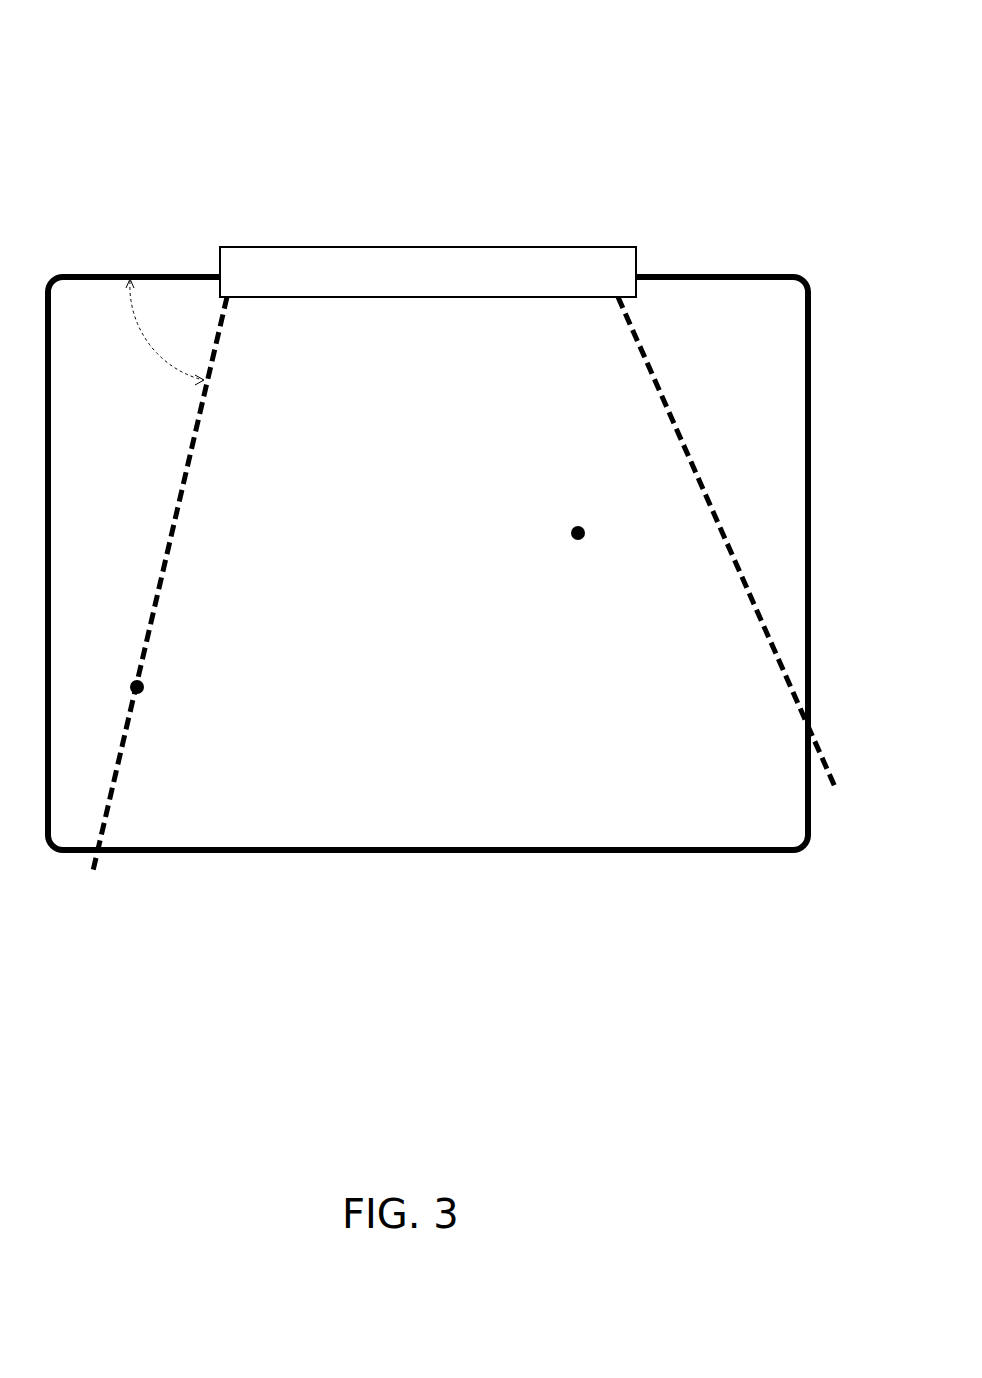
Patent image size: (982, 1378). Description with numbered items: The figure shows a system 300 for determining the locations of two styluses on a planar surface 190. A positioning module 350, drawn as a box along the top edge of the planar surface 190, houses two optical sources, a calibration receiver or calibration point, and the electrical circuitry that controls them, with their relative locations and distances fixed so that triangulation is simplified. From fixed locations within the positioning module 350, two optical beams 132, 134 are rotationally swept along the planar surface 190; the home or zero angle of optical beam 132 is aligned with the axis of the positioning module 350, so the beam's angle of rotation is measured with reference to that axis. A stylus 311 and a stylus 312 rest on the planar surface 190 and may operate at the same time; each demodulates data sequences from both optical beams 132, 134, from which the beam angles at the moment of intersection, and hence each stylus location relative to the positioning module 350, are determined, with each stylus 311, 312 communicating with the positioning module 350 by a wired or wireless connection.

The system 300 is at (718, 66).
The planar surface 190 is at (410, 862).
The positioning module 350 is at (428, 272).
The optical beam 132 is at (171, 530).
The optical beam 134 is at (745, 601).
The stylus 311 is at (148, 678).
The stylus 312 is at (568, 542).